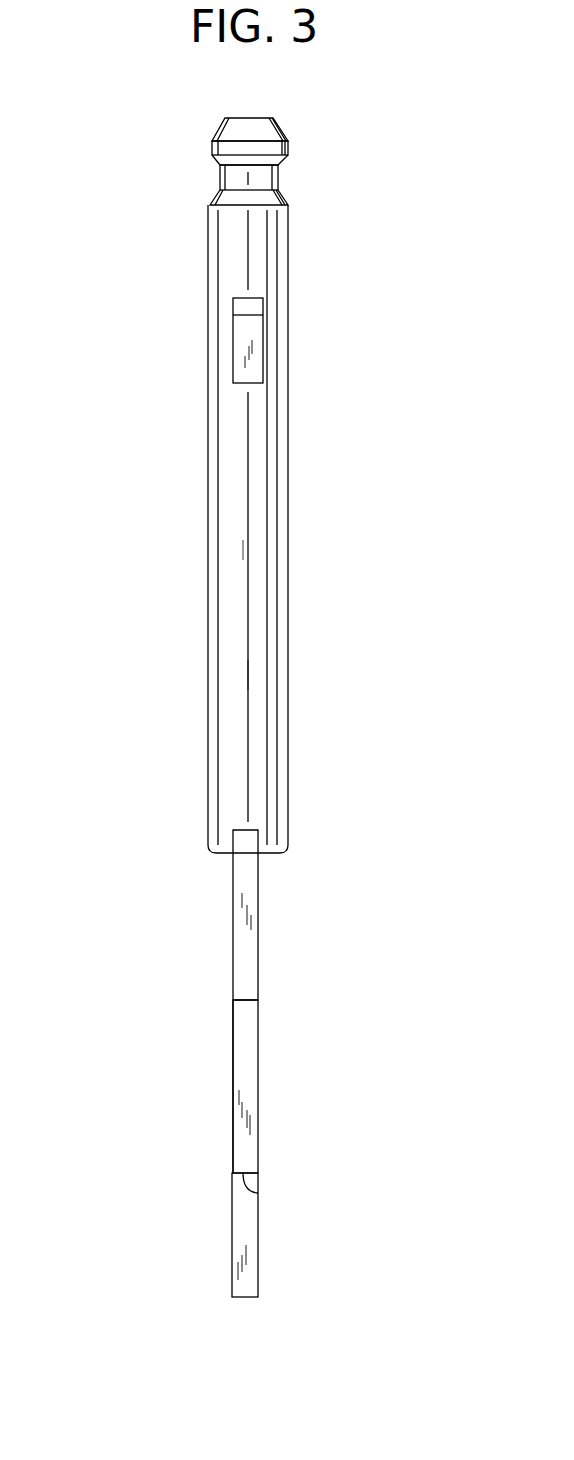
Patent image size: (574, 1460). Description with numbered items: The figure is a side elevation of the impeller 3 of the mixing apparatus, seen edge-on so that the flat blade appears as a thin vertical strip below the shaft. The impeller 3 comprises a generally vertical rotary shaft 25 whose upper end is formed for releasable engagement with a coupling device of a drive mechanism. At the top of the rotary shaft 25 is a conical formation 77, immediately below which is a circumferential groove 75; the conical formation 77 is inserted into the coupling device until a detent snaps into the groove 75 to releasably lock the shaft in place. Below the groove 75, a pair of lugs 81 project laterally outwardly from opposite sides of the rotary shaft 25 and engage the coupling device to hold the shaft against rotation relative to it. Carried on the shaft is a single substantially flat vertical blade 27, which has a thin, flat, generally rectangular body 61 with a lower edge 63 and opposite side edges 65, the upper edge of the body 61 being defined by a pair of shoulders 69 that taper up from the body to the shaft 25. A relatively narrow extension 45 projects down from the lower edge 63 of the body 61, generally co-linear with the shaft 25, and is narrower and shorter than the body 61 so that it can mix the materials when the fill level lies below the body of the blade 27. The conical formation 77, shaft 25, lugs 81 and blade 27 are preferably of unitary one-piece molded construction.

The impeller 3 is at (342, 264).
The conical formation 77 is at (218, 135).
The circumferential groove 75 is at (278, 178).
The rotary shaft 25 is at (288, 621).
The lugs 81 is at (260, 347).
The shoulders 69 is at (258, 919).
The blade 27 is at (265, 1059).
The body 61 is at (233, 1066).
The side edges 65 is at (258, 1107).
The lower edge 63 is at (258, 1194).
The extension 45 is at (258, 1255).